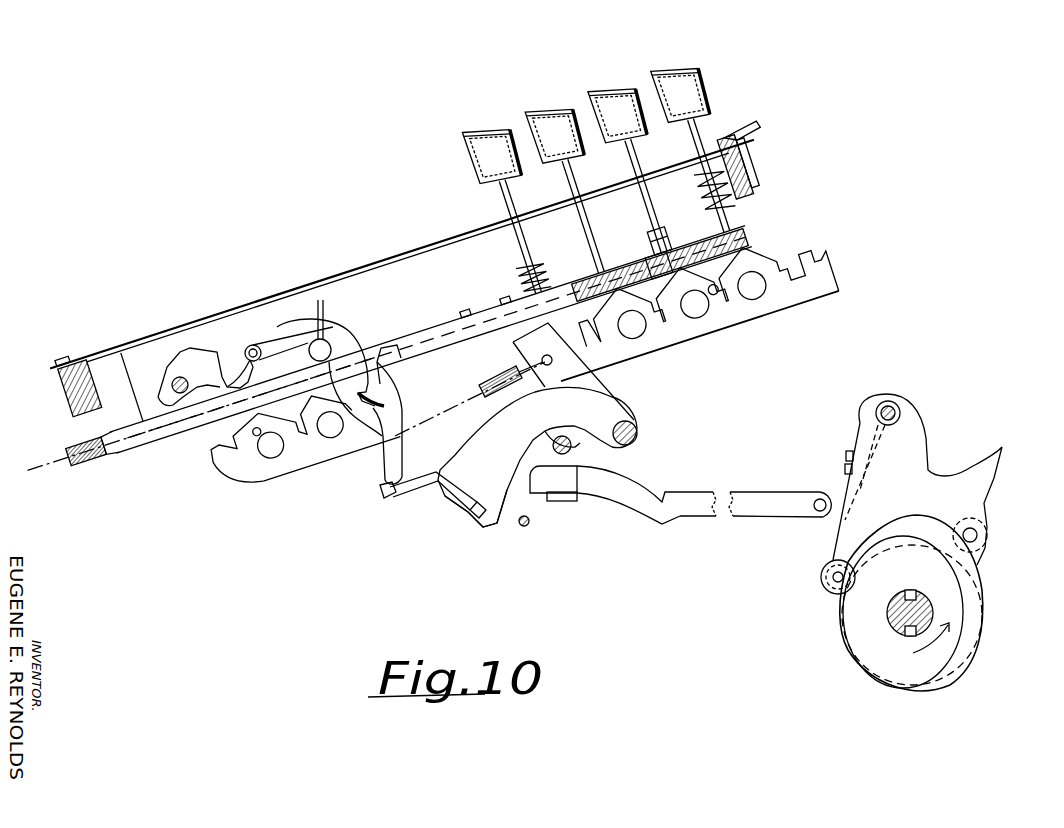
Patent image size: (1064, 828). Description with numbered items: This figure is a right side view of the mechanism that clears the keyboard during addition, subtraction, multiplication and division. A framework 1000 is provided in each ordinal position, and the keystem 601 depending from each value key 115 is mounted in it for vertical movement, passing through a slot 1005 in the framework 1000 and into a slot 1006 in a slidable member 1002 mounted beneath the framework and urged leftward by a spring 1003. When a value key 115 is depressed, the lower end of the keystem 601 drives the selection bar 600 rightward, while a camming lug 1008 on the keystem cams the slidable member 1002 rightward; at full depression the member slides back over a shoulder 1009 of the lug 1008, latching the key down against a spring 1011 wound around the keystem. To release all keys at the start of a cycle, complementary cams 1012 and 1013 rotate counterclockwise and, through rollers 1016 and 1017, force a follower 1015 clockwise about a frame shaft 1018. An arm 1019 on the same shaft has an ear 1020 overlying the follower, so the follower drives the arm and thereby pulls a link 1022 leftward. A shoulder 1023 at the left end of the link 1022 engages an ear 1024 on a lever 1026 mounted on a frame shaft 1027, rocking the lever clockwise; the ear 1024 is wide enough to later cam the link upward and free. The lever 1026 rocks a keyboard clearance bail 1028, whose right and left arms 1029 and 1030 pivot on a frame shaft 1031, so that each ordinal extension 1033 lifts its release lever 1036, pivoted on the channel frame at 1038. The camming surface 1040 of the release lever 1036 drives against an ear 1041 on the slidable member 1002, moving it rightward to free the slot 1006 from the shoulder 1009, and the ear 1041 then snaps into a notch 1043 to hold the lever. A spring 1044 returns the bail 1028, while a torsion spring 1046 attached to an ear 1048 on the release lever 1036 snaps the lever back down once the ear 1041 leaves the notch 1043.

The value key 115 is at (540, 112).
The keystem 601 is at (700, 131).
The selection bar 600 is at (770, 270).
The framework 1000 is at (432, 255).
The slidable member 1002 is at (188, 440).
The spring 1003 is at (70, 445).
The slot 1005 is at (610, 270).
The slot 1006 is at (660, 272).
The camming lug 1008 is at (703, 242).
The shoulder 1009 is at (598, 255).
The spring 1011 is at (522, 258).
The cam 1012 is at (842, 645).
The cam 1013 is at (862, 660).
The follower 1015 is at (918, 432).
The roller 1016 is at (825, 578).
The roller 1017 is at (985, 535).
The frame shaft 1018 is at (890, 405).
The arm 1019 is at (870, 428).
The ear 1020 is at (844, 460).
The link 1022 is at (731, 517).
The shoulder 1023 is at (583, 500).
The ear 1024 is at (560, 503).
The lever 1026 is at (490, 530).
The frame shaft 1027 is at (575, 447).
The keyboard clearance bail 1028 is at (448, 493).
The right arm 1029 is at (627, 411).
The left arm 1030 is at (612, 386).
The frame shaft 1031 is at (638, 435).
The extension 1033 is at (385, 495).
The release lever 1036 is at (397, 456).
The pivot 1038 is at (172, 387).
The camming surface 1040 is at (348, 343).
The ear 1041 is at (385, 368).
The notch 1043 is at (383, 403).
The spring 1044 is at (500, 397).
The torsion spring 1046 is at (326, 303).
The ear 1048 is at (227, 382).